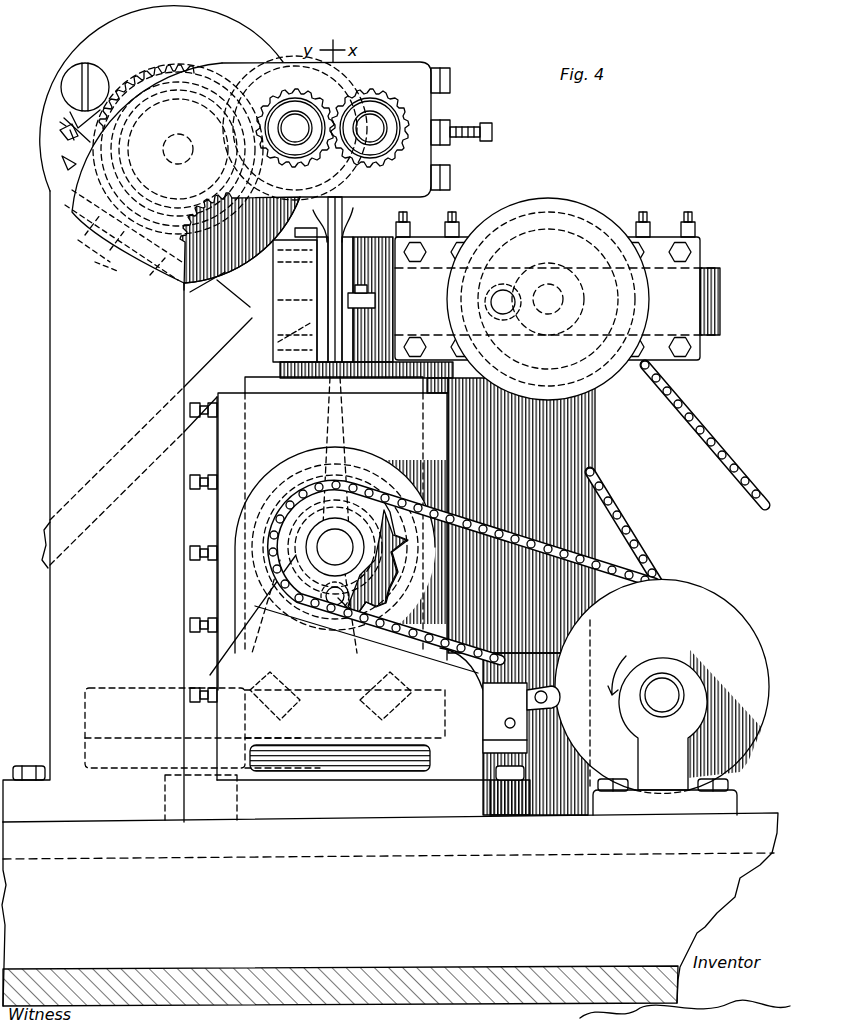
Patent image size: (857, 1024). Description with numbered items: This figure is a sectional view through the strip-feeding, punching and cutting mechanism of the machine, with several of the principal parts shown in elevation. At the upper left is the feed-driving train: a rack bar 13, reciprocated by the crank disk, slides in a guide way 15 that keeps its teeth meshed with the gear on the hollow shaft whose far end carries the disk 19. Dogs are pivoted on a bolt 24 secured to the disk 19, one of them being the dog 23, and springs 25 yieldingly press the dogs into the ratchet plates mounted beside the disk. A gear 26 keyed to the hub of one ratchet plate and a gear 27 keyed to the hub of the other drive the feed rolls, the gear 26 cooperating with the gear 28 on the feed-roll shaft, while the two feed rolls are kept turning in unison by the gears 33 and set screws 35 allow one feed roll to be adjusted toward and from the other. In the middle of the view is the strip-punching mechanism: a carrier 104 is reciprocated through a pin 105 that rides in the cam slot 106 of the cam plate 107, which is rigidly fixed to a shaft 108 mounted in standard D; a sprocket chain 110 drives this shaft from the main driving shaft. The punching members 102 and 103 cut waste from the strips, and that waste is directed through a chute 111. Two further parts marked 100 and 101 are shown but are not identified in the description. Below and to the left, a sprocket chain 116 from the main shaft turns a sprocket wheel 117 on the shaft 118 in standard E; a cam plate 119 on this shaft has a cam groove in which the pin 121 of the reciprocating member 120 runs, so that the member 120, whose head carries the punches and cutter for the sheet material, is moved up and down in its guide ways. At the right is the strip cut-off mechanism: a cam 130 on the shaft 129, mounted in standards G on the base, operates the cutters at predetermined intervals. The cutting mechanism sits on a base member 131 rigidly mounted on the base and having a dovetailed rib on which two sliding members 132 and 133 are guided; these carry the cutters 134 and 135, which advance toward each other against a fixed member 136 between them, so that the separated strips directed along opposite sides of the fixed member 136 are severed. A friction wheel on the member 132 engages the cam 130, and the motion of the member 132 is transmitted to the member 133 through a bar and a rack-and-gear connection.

The rack bar 13 is at (40, 158).
The guide way 15 is at (100, 226).
The disk 19 is at (118, 38).
The dog 23 is at (72, 109).
The bolt or shaft 24 is at (76, 80).
The springs 25 is at (62, 128).
The gear 26 is at (167, 206).
The gear 27 is at (165, 74).
The gear 28 is at (261, 169).
The gears 33 is at (332, 116).
The set screws 35 is at (486, 124).
The fork 100 is at (350, 218).
The shaft 101 is at (316, 208).
The punching member 102 is at (300, 295).
The punching member 103 is at (356, 292).
The carrier 104 is at (720, 296).
The pin 105 is at (498, 300).
The cam slot 106 is at (510, 262).
The cam plate 107 is at (535, 200).
The shaft 108 is at (549, 300).
The sprocket chain 110 is at (712, 442).
The chute 111 is at (200, 368).
The sprocket chain 116 is at (612, 568).
The sprocket wheel 117 is at (348, 556).
The shaft 118 is at (335, 547).
The cam plate 119 is at (281, 478).
The reciprocating member 120 is at (381, 389).
The pin 121 is at (320, 591).
The shaft 129 is at (656, 686).
The cam 130 is at (705, 598).
The base member 131 is at (553, 690).
The sliding member 132 is at (490, 700).
The sliding member 133 is at (122, 688).
The cutter 134 is at (392, 682).
The cutter 135 is at (288, 676).
The fixed member 136 is at (350, 745).